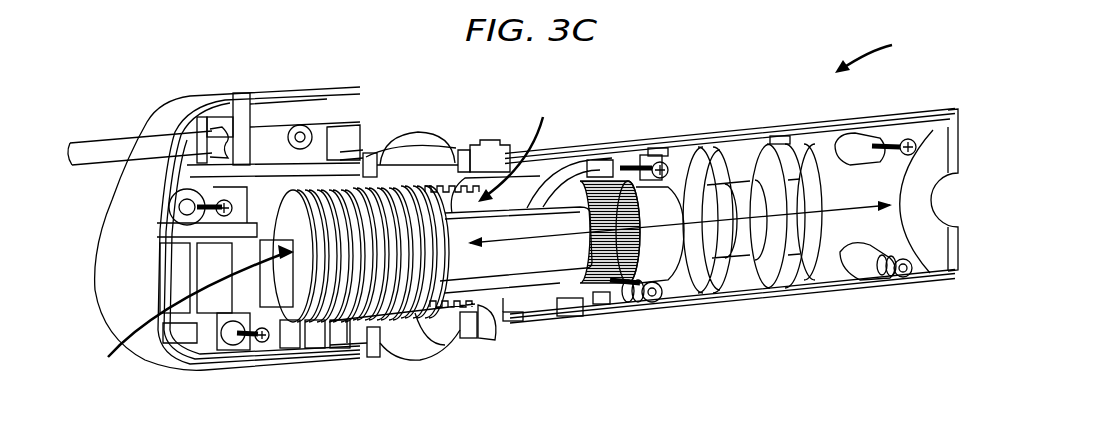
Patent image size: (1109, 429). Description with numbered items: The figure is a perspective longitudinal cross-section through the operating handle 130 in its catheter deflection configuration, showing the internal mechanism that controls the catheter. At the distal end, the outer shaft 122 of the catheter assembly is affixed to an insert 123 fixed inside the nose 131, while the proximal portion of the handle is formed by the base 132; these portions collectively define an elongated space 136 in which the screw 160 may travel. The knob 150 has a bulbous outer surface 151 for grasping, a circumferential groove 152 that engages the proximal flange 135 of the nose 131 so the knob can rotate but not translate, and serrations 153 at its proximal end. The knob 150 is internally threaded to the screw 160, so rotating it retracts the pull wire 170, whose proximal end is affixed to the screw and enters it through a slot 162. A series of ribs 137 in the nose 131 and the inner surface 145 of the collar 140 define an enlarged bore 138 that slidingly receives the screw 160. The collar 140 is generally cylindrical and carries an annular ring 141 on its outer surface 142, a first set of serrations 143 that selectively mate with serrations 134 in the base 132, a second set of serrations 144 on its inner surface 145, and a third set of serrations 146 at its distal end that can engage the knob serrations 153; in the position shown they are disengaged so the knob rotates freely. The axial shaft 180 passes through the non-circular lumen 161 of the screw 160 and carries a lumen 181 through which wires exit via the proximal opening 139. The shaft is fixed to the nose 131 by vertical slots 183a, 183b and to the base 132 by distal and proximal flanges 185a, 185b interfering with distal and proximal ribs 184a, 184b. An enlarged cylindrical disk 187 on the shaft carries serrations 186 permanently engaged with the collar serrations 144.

The outer shaft 122 is at (92, 139).
The insert 123 is at (237, 98).
The operating handle 130 is at (699, 146).
The nose 131 is at (178, 96).
The base 132 is at (720, 132).
The serrations 134 is at (622, 303).
The proximal flange 135 is at (370, 152).
The elongated space 136 is at (504, 152).
The ribs 137 is at (318, 348).
The enlarged bore 138 is at (187, 310).
The proximal opening 139 is at (953, 183).
The collar 140 is at (600, 305).
The annular ring 141 is at (494, 140).
The outer surface 142 is at (515, 324).
The first set of serrations 143 is at (662, 156).
The second set of serrations 144 is at (590, 170).
The inner surface 145 is at (513, 322).
The third set of serrations 146 is at (476, 340).
The knob 150 is at (433, 128).
The bulbous outer surface 151 is at (455, 340).
The circumferential groove 152 is at (373, 357).
The serrations 153 is at (460, 148).
The screw 160 is at (425, 362).
The non-circular lumen 161 is at (258, 342).
The slot 162 is at (273, 205).
The pull wire 170 is at (236, 180).
The axial shaft 180 is at (707, 268).
The lumen 181 is at (540, 207).
The vertical slot 183a is at (235, 275).
The vertical slot 183b is at (295, 283).
The distal rib 184a is at (660, 148).
The proximal rib 184b is at (782, 136).
The distal flange 185a is at (732, 305).
The proximal flange 185b is at (806, 305).
The serrations 186 is at (670, 270).
The enlarged cylindrical disk 187 is at (567, 316).